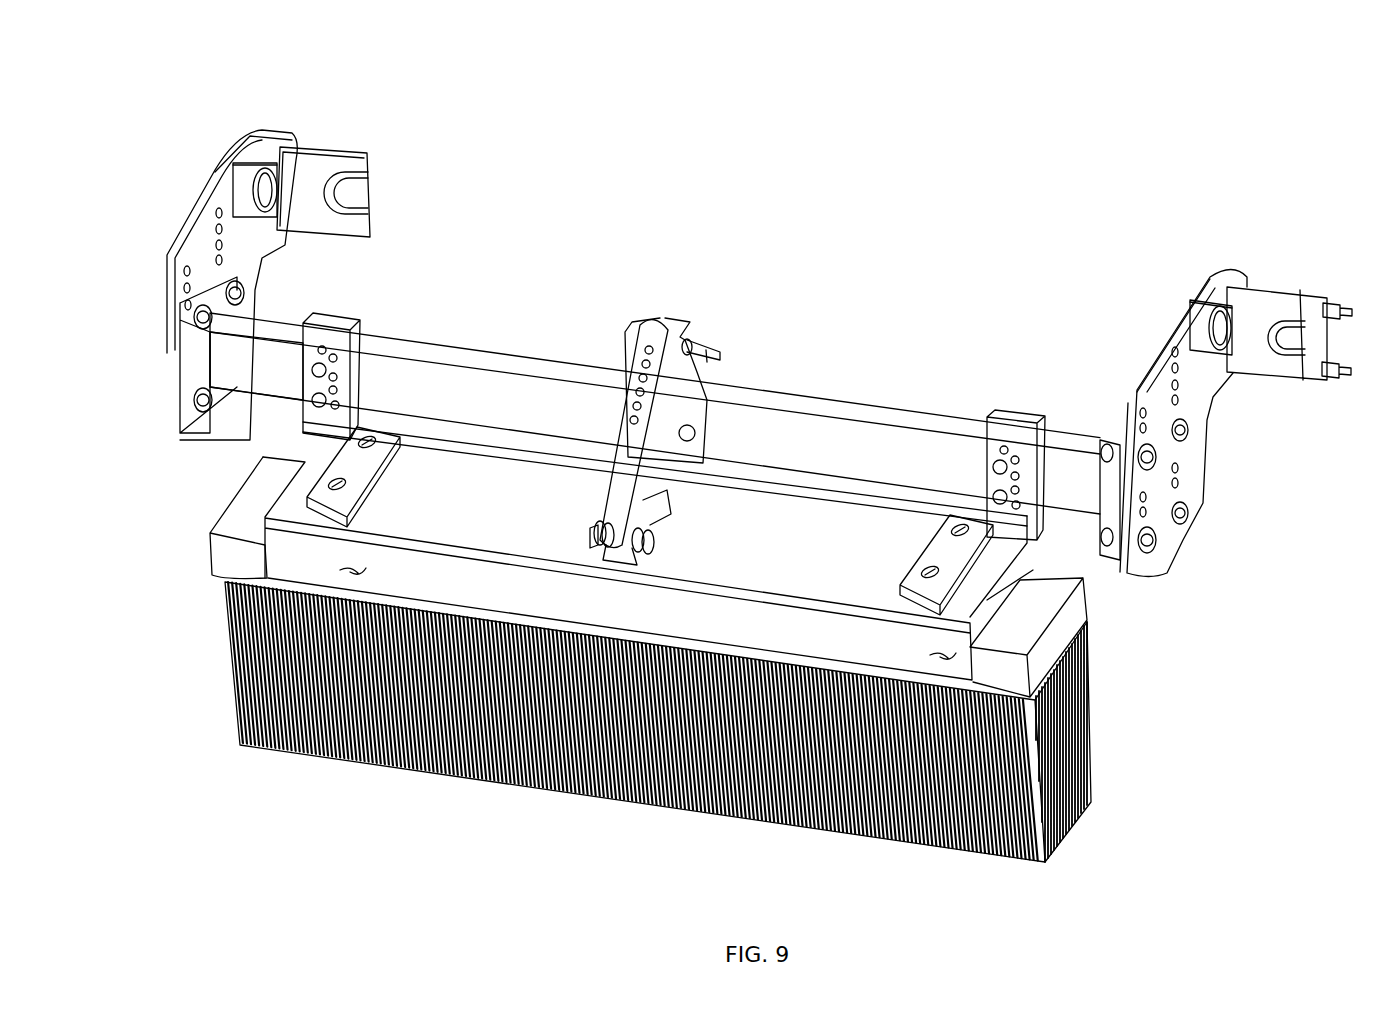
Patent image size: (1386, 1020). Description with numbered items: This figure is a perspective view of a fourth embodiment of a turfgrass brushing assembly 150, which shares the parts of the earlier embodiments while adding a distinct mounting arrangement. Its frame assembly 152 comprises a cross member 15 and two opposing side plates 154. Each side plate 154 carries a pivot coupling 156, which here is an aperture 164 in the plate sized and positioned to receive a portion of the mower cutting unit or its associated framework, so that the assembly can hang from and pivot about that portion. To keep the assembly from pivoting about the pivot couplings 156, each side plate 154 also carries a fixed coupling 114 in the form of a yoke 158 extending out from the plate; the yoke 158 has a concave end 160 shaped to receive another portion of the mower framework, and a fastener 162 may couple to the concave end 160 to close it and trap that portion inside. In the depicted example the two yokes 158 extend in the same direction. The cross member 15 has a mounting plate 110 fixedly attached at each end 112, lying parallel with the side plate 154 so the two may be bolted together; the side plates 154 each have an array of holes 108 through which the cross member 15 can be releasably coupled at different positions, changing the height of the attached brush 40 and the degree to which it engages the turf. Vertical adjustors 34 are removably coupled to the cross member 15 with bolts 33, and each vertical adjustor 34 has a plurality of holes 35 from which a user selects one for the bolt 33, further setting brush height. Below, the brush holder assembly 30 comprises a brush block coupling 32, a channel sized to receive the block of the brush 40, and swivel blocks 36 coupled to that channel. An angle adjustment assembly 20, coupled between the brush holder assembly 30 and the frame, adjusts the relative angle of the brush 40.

The cross member 15 is at (530, 358).
The angle adjustment assembly 20 is at (678, 300).
The brush holder assembly 30 is at (1152, 662).
The brush block coupling 32 is at (992, 565).
The bolt 33 is at (330, 370).
The vertical adjustor 34 is at (997, 440).
The plurality of holes 35 is at (1013, 460).
The swivel block 36 is at (350, 463).
The brush 40 is at (228, 700).
The array of holes 108 is at (217, 243).
The mounting plate 110 is at (202, 358).
The end 112 is at (220, 353).
The fixed coupling 114 is at (464, 178).
The turfgrass brushing assembly 150 is at (1200, 150).
The frame assembly 152 is at (160, 215).
The side plate 154 is at (268, 133).
The pivot coupling 156 is at (250, 180).
The yoke 158 is at (332, 167).
The concave end 160 is at (370, 177).
The fastener 162 is at (1300, 383).
The aperture 164 is at (267, 207).